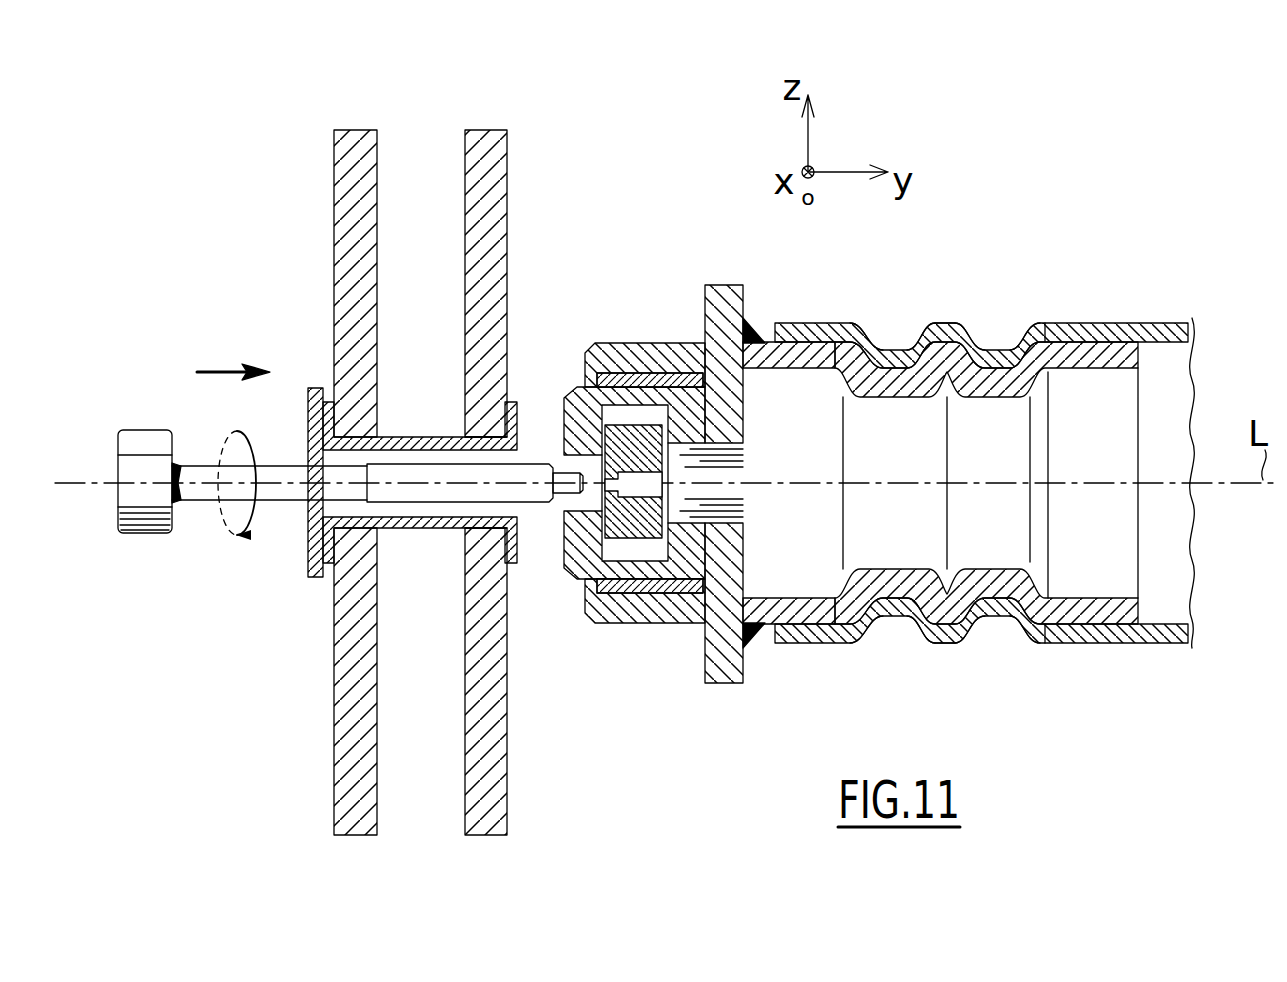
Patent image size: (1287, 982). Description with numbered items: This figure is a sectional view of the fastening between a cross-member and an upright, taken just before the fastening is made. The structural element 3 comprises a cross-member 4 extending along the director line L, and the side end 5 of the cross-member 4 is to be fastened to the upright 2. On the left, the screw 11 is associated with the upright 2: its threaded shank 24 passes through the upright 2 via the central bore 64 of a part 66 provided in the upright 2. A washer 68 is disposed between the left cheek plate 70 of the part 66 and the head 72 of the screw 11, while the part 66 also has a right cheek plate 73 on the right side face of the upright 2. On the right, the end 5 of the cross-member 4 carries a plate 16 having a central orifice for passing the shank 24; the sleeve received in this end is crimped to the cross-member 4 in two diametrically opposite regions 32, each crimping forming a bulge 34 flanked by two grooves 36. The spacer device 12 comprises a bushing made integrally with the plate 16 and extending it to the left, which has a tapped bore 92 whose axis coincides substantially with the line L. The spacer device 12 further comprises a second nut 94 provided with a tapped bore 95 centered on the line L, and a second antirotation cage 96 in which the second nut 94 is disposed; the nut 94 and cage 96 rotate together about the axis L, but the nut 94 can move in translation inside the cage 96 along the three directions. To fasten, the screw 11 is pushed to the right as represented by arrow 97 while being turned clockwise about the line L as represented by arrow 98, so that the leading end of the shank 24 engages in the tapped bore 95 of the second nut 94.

The upright 2 is at (473, 473).
The structural element 3 is at (968, 469).
The cross-member 4 is at (1117, 320).
The side end of the cross-member 5 is at (824, 323).
The screw 11 is at (339, 507).
The spacer device 12 is at (645, 435).
The plate 16 is at (727, 285).
The shank of the screw 24 is at (535, 505).
The crimping region 32 is at (965, 312).
The bulge 34 is at (940, 322).
The groove 36 is at (893, 323).
The central bore 64 is at (428, 436).
The part 66 is at (402, 530).
The washer 68 is at (307, 565).
The left cheek plate 70 is at (334, 408).
The head of the screw 72 is at (143, 431).
The right cheek plate 73 is at (500, 558).
The tapped bore 92 is at (612, 343).
The second nut 94 is at (660, 545).
The tapped bore of the second nut 95 is at (640, 488).
The second antirotation cage 96 is at (552, 376).
The arrow 97 is at (215, 372).
The arrow 98 is at (253, 437).